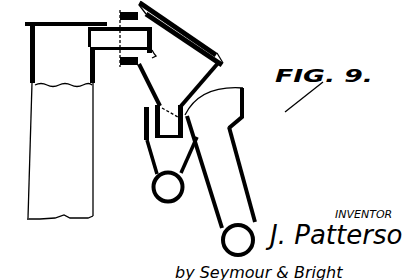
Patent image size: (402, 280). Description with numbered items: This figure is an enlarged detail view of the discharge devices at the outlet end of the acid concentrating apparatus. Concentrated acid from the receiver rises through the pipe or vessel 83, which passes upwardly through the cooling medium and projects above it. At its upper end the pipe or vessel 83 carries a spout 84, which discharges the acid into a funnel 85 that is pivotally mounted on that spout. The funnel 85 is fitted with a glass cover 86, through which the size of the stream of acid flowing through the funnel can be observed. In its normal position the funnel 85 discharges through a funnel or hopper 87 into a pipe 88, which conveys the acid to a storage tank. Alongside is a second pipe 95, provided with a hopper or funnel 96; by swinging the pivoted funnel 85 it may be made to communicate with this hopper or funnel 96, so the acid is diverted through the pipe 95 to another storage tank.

The pipe or vessel 83 is at (66, 120).
The spout 84 is at (110, 50).
The funnel 85 is at (187, 80).
The glass cover 86 is at (181, 34).
The funnel or hopper 87 is at (144, 130).
The pipe 88 is at (168, 202).
The pipe 95 is at (226, 240).
The hopper or funnel 96 is at (223, 158).